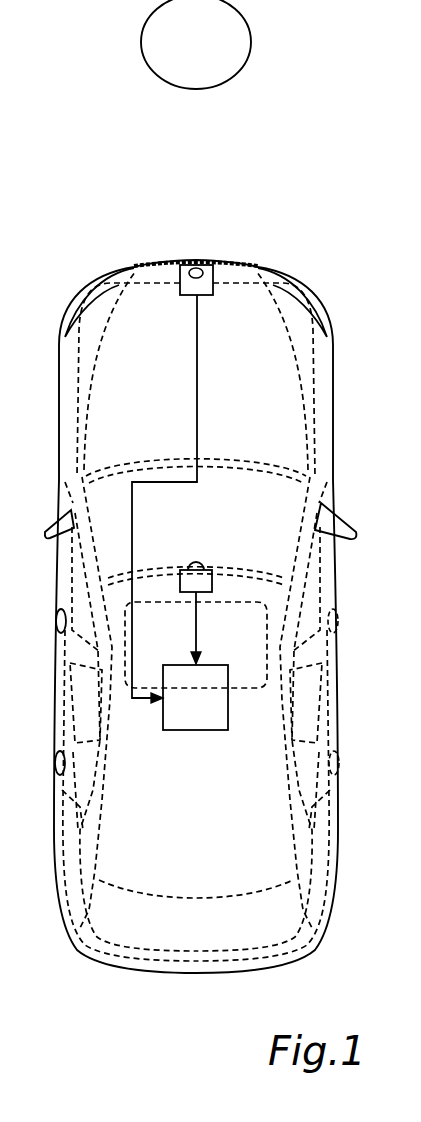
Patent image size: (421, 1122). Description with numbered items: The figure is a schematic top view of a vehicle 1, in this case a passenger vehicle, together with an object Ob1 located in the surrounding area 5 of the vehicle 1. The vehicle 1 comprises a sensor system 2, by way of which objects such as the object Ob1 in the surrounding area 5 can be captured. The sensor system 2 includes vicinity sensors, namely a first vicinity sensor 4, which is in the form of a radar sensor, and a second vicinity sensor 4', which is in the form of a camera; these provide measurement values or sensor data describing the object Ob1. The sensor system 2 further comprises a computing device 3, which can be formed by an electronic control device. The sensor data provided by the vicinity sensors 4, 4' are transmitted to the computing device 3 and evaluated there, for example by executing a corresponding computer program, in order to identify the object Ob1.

The vehicle 1 is at (270, 270).
The sensor system 2 is at (64, 245).
The computing device 3 is at (228, 702).
The first vicinity sensor 4 is at (219, 324).
The second vicinity sensor 4' is at (282, 590).
The surrounding area 5 is at (198, 165).
The object Ob1 is at (233, 42).